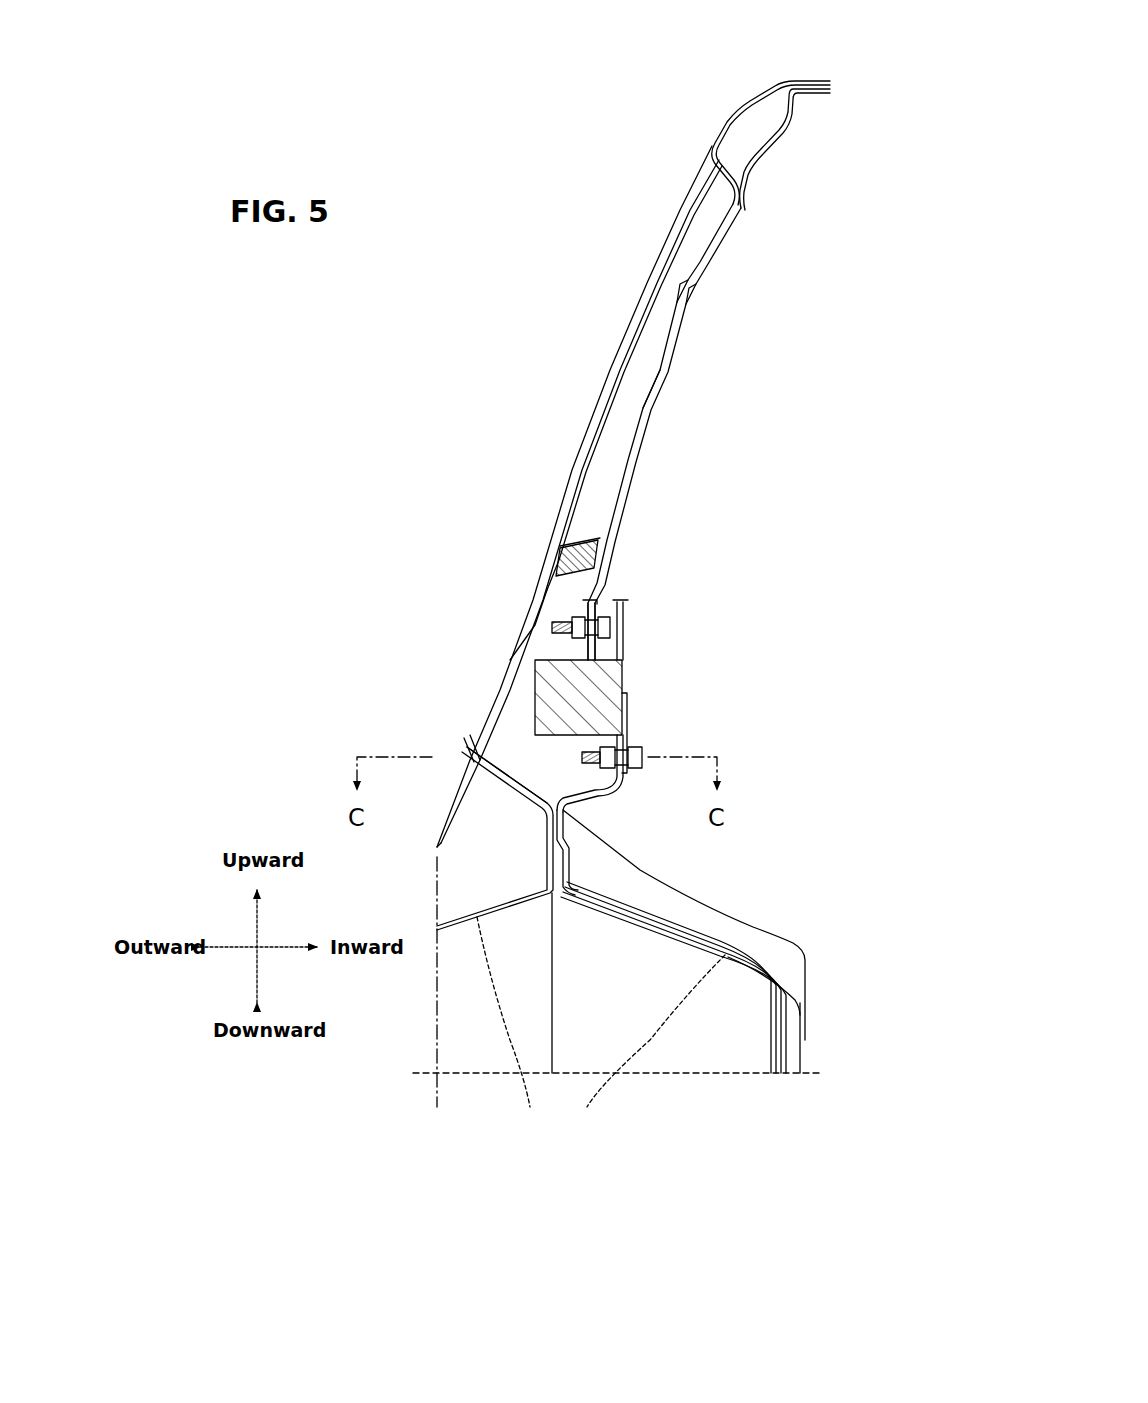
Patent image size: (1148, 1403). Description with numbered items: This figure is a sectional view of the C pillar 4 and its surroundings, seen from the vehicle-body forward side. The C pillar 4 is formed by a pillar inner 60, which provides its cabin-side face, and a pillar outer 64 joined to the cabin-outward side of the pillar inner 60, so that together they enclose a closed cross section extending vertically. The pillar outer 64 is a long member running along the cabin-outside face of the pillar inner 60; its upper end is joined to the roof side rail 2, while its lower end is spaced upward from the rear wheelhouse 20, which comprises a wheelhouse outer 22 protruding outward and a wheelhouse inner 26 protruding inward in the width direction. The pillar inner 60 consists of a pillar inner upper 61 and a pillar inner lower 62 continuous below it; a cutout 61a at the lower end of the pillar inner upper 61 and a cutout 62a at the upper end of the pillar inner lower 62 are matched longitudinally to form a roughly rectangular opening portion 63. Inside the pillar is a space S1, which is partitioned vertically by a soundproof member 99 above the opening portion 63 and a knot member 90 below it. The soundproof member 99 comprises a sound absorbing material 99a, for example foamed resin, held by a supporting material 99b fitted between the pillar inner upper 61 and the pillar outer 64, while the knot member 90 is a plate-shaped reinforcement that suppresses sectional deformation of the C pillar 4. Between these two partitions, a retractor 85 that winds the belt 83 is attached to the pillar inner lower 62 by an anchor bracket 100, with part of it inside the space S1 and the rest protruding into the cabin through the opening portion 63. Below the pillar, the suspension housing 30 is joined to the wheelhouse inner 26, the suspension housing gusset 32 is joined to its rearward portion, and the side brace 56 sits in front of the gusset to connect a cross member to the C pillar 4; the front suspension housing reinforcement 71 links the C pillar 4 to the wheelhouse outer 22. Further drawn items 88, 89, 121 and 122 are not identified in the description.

The roof side rail 2 is at (733, 117).
The C pillar 4 is at (687, 365).
The pillar inner 60 is at (650, 408).
The pillar inner upper 61 is at (627, 463).
The pillar outer 64 is at (600, 388).
The space S1 is at (640, 353).
The soundproof member 99 is at (493, 538).
The sound absorbing material 99a is at (577, 544).
The supporting material 99b is at (578, 570).
The opening portion 63 is at (448, 676).
The cutout 61a is at (567, 653).
The cutout 62a is at (465, 757).
The pillar inner lower 62 is at (545, 855).
The knot member 90 is at (512, 777).
The front suspension housing reinforcement 71 is at (452, 783).
The mounting plate 88 is at (597, 600).
The belt 83 is at (625, 617).
The retractor 85 is at (622, 672).
The plate portion 89 is at (628, 705).
The bolt 121 is at (553, 627).
The bolt 122 is at (643, 757).
The anchor bracket 100 is at (597, 790).
The suspension housing gusset 32 is at (753, 927).
The suspension housing 30 is at (627, 930).
The side brace 56 is at (570, 897).
The rear wheelhouse 20 is at (601, 1055).
The wheelhouse outer 22 is at (511, 1030).
The wheelhouse inner 26 is at (647, 1049).